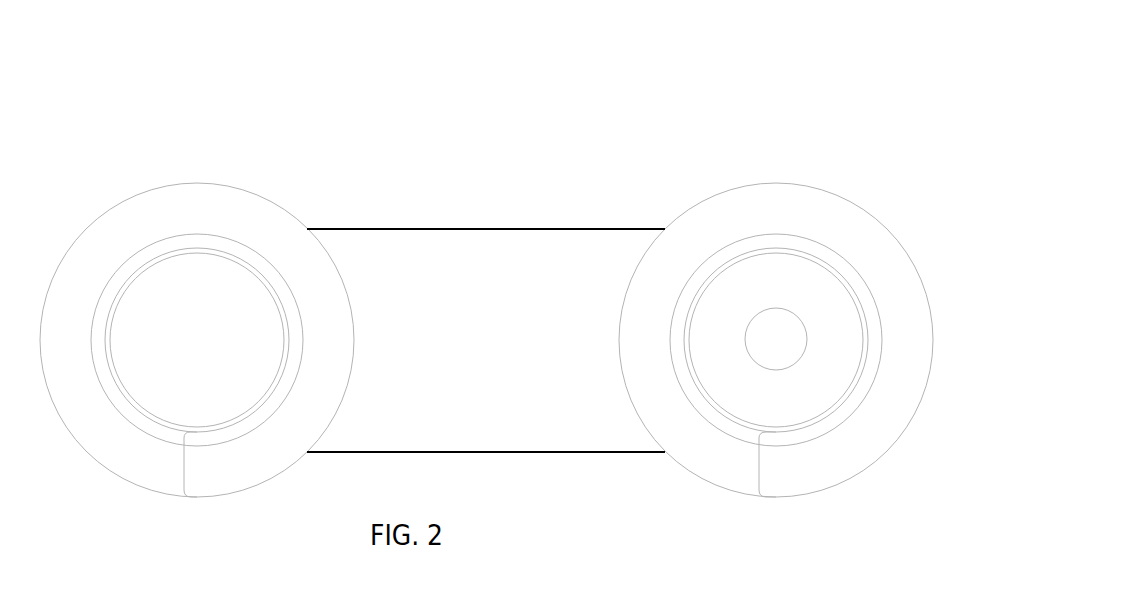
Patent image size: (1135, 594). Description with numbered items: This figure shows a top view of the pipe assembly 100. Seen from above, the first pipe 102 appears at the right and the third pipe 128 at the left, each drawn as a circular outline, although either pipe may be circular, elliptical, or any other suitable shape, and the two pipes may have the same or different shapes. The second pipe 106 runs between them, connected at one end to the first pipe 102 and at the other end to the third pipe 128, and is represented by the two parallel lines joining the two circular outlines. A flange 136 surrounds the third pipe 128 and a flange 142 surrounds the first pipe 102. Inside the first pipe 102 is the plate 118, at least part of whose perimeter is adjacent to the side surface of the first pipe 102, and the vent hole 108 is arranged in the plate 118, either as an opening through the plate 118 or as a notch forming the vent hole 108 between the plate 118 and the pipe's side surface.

The pipe assembly 100 is at (780, 117).
The first pipe 102 is at (696, 373).
The second pipe 106 is at (452, 246).
The vent hole 108 is at (774, 323).
The plate 118 is at (765, 258).
The third pipe 128 is at (118, 373).
The flange 136 is at (184, 465).
The flange 142 is at (759, 465).